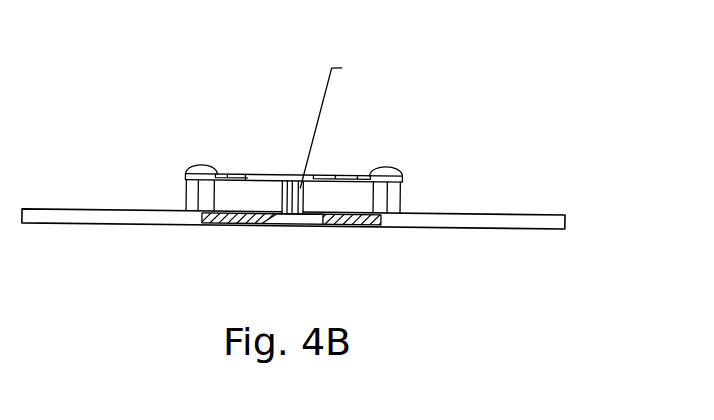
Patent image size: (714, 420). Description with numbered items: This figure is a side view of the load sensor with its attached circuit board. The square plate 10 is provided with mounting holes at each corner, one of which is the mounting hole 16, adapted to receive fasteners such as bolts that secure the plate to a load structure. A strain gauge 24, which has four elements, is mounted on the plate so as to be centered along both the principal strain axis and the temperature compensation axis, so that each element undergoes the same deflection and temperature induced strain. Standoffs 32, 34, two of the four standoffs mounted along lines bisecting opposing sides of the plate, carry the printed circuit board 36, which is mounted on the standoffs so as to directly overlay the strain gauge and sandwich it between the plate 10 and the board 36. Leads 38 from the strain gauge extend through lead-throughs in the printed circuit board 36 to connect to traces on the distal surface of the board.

The square plate 10 is at (470, 218).
The mounting hole 16 is at (292, 220).
The strain gauge 24 is at (276, 214).
The standoff 32 is at (193, 195).
The standoff 34 is at (393, 192).
The printed circuit board 36 is at (263, 175).
The leads 38 is at (307, 192).